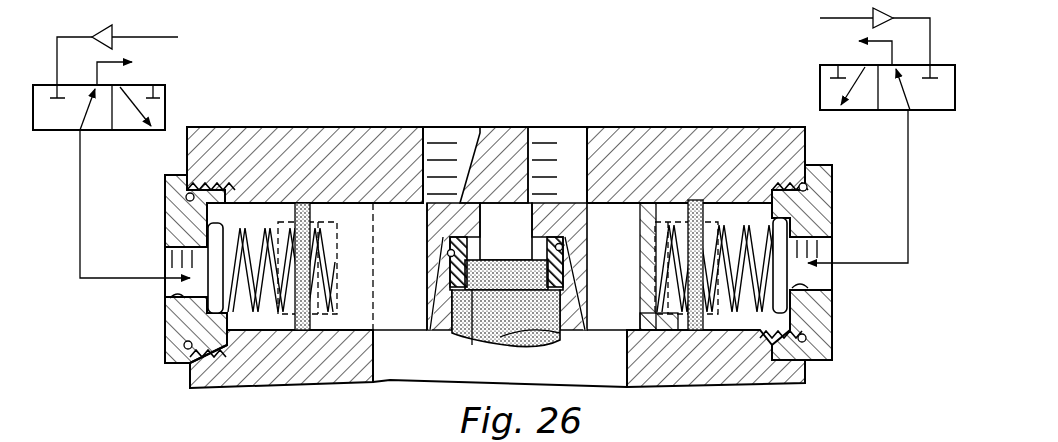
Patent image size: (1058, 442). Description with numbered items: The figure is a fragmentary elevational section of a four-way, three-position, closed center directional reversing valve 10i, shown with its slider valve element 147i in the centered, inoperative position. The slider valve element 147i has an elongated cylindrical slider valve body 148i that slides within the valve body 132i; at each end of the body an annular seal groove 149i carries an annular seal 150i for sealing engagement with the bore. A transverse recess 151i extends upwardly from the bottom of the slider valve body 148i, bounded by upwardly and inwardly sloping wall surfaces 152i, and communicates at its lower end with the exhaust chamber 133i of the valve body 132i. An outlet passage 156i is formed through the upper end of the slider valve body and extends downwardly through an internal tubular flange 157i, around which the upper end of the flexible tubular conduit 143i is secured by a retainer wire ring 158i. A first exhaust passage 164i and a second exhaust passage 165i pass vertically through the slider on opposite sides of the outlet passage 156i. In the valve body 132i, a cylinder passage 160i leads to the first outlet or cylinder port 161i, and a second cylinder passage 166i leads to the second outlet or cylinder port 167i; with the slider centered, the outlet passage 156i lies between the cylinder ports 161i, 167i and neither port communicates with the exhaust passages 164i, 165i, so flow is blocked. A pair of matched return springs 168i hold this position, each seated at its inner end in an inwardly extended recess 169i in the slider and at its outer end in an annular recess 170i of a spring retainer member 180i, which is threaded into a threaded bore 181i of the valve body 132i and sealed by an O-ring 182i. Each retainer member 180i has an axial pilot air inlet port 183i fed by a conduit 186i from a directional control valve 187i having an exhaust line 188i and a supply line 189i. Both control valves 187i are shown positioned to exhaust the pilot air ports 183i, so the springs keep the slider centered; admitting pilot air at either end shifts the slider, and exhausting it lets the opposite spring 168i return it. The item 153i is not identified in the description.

The directional reversing valve 10i is at (219, 124).
The valve body 132i is at (254, 140).
The exhaust chamber 133i is at (627, 360).
The flexible tubular conduit 143i is at (457, 332).
The slider valve element 147i is at (322, 200).
The slider valve body 148i is at (350, 315).
The annular seal groove 149i is at (305, 290).
The annular seal 150i is at (305, 203).
The transverse recess 151i is at (572, 296).
The sloping wall surfaces 152i is at (426, 245).
The partition 153i is at (479, 196).
The outlet passage 156i is at (477, 272).
The internal tubular flange 157i is at (477, 334).
The retainer wire ring 158i is at (563, 247).
The cylinder passage 160i is at (476, 195).
The first outlet or cylinder port 161i is at (428, 197).
The first exhaust passage 164i is at (398, 127).
The second exhaust passage 165i is at (630, 203).
The second cylinder passage 166i is at (566, 160).
The second outlet or cylinder port 167i is at (533, 143).
The return spring 168i is at (245, 293).
The inwardly extended recess 169i is at (336, 200).
The annular recess 170i is at (187, 210).
The spring retainer member 180i is at (163, 350).
The threaded bore 181i is at (780, 195).
The O-ring seal 182i is at (186, 195).
The pilot air inlet port 183i is at (173, 298).
The conduit 186i is at (105, 277).
The directional control valve 187i is at (57, 134).
The exhaust line 188i is at (88, 78).
The supply line 189i is at (166, 38).